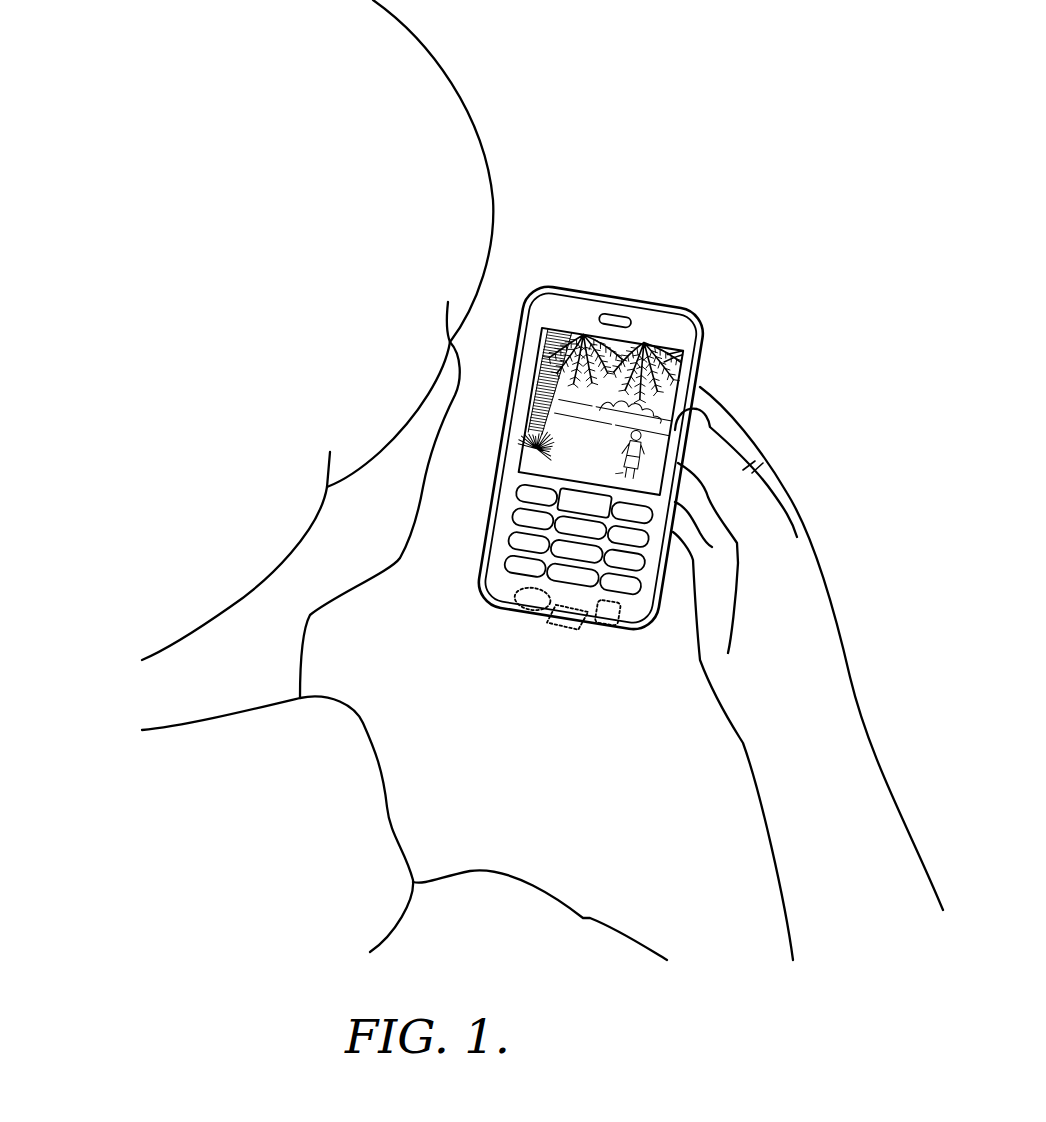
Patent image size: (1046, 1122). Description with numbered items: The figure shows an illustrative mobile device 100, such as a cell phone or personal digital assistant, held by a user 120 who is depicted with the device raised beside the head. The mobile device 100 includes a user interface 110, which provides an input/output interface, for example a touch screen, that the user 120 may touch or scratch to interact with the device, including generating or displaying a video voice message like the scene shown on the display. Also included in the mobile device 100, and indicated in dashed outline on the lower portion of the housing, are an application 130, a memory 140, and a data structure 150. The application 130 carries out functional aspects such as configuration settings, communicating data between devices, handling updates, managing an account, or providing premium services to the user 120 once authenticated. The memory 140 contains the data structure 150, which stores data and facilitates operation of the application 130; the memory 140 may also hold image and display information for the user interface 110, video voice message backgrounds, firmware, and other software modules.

The mobile device 100 is at (637, 250).
The user interface 110 is at (665, 347).
The user 120 is at (516, 186).
The application 130 is at (525, 611).
The memory 140 is at (563, 627).
The data structure 150 is at (607, 623).